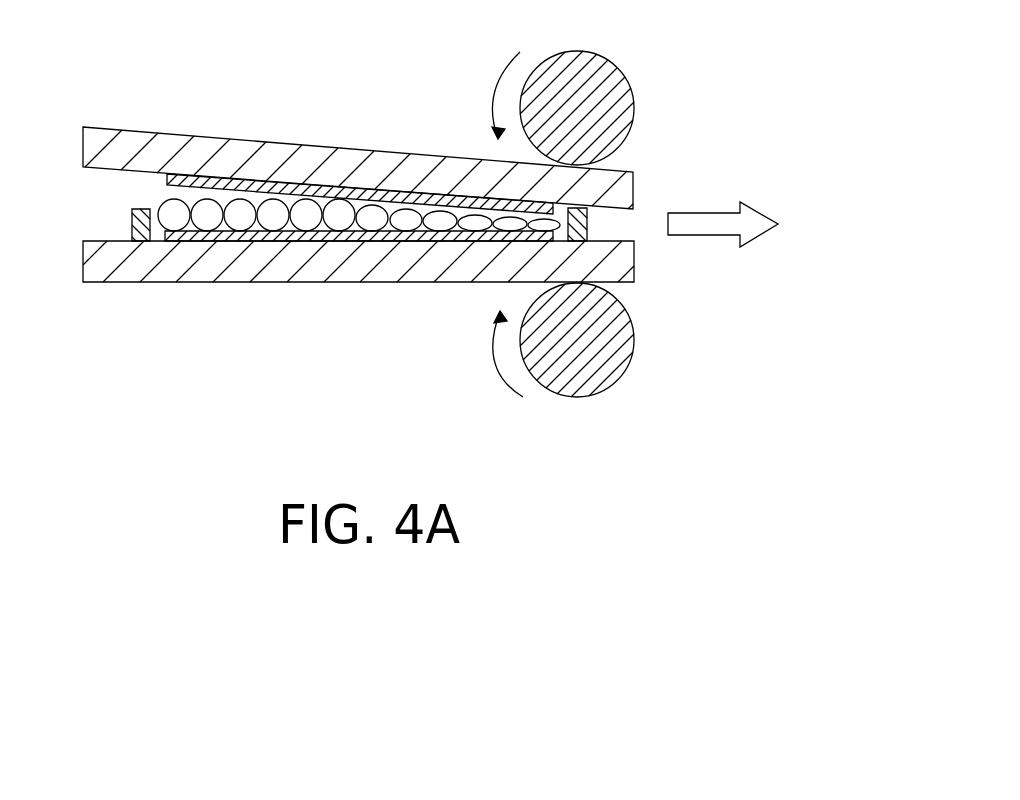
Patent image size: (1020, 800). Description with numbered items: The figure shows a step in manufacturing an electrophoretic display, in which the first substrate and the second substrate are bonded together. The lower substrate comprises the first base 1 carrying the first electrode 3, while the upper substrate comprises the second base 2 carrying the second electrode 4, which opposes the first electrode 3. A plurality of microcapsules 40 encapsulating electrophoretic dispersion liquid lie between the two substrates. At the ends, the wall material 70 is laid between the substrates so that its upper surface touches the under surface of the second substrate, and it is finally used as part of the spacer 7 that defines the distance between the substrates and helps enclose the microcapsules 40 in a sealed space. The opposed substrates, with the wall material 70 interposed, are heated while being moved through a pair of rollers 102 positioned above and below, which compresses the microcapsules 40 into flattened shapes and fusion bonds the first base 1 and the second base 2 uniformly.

The first base 1 is at (620, 268).
The second base 2 is at (618, 190).
The first electrode 3 is at (176, 229).
The second electrode 4 is at (182, 176).
The microcapsules 40 is at (305, 220).
The spacer 7 is at (302, 206).
The wall material 70 is at (132, 222).
The rollers 102 is at (600, 73).